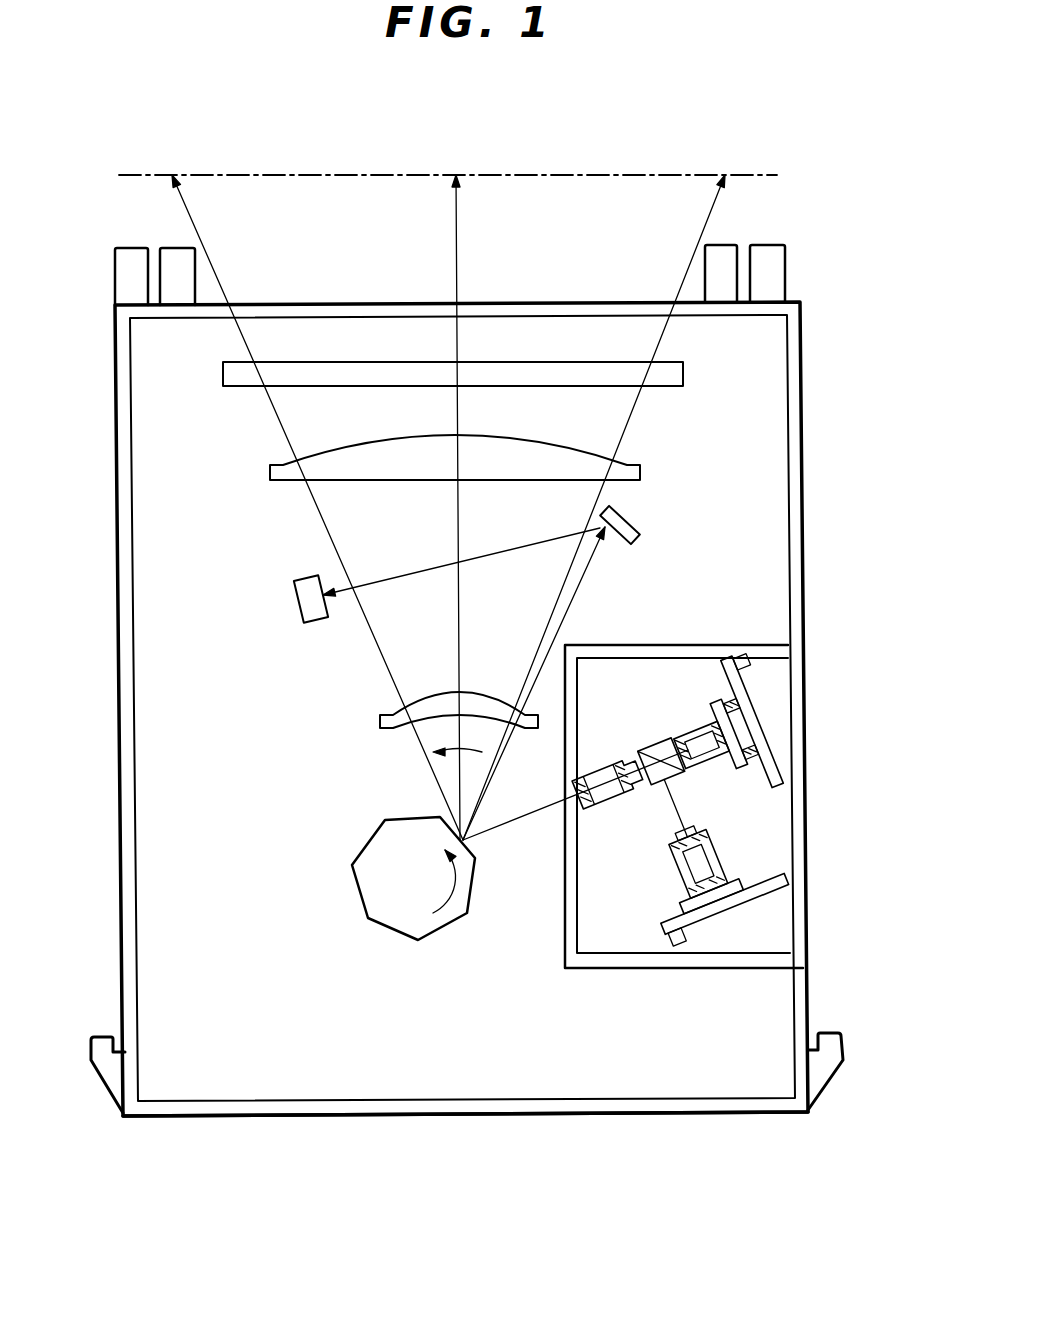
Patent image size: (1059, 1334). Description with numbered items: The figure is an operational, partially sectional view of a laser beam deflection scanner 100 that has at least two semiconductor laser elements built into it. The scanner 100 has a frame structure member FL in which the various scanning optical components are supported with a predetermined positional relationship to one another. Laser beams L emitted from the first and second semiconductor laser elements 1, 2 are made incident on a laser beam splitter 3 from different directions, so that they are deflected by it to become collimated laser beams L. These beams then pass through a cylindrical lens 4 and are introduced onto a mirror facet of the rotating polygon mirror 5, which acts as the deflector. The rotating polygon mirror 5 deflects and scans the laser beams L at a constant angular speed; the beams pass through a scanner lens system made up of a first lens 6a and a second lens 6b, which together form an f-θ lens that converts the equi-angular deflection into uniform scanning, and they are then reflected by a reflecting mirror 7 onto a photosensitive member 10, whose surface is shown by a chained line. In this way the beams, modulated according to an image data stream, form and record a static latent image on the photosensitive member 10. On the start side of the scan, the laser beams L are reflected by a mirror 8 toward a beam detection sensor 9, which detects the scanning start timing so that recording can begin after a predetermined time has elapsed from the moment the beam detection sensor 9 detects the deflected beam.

The first semiconductor laser element 1 is at (738, 790).
The second semiconductor laser element 2 is at (672, 870).
The laser beam splitter 3 is at (648, 746).
The cylindrical lens 4 is at (600, 768).
The rotating polygon mirror 5 is at (378, 925).
The first lens 6a is at (380, 722).
The second lens 6b is at (266, 482).
The reflecting mirror 7 is at (683, 372).
The mirror 8 is at (640, 530).
The beam detection sensor 9 is at (290, 603).
The photosensitive member 10 is at (745, 172).
The laser beam deflection scanner 100 is at (803, 512).
The laser beams L is at (517, 822).
The frame structure member FL is at (667, 1117).